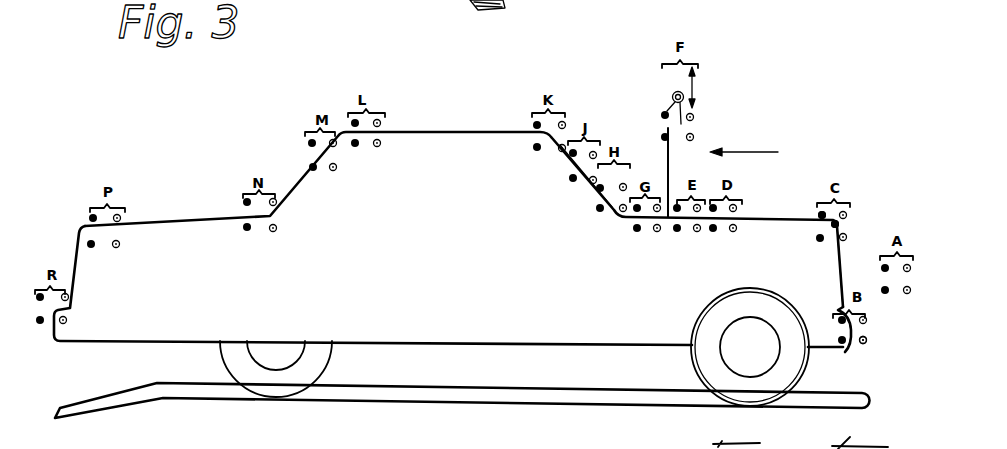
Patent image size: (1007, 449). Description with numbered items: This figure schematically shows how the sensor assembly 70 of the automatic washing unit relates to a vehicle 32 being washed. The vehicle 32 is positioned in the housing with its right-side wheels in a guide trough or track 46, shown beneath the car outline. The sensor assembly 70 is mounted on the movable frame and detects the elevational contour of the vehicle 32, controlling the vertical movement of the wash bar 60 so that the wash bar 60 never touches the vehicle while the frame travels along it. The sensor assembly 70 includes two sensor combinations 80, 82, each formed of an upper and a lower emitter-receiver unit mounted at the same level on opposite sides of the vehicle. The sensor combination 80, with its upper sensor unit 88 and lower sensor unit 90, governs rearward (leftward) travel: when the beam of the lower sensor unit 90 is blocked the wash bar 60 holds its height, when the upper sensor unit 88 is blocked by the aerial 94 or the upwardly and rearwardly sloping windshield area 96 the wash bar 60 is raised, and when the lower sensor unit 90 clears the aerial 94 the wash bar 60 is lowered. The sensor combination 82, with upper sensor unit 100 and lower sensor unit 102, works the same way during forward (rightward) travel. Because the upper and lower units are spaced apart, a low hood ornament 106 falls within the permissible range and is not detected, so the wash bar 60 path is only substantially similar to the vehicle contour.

The vehicle 32 is at (174, 197).
The guide trough or track 46 is at (510, 0).
The wash bar 60 is at (672, 95).
The sensor assembly 70 is at (874, 259).
The sensor combination 80 is at (843, 354).
The sensor combination 82 is at (857, 352).
The upper sensor unit 88 is at (818, 213).
The lower sensor unit 90 is at (816, 240).
The aerial or antenna 94 is at (667, 152).
The windshield area 96 is at (600, 190).
The upper sensor unit 100 is at (68, 297).
The lower sensor unit 102 is at (66, 320).
The hood ornament 106 is at (840, 222).